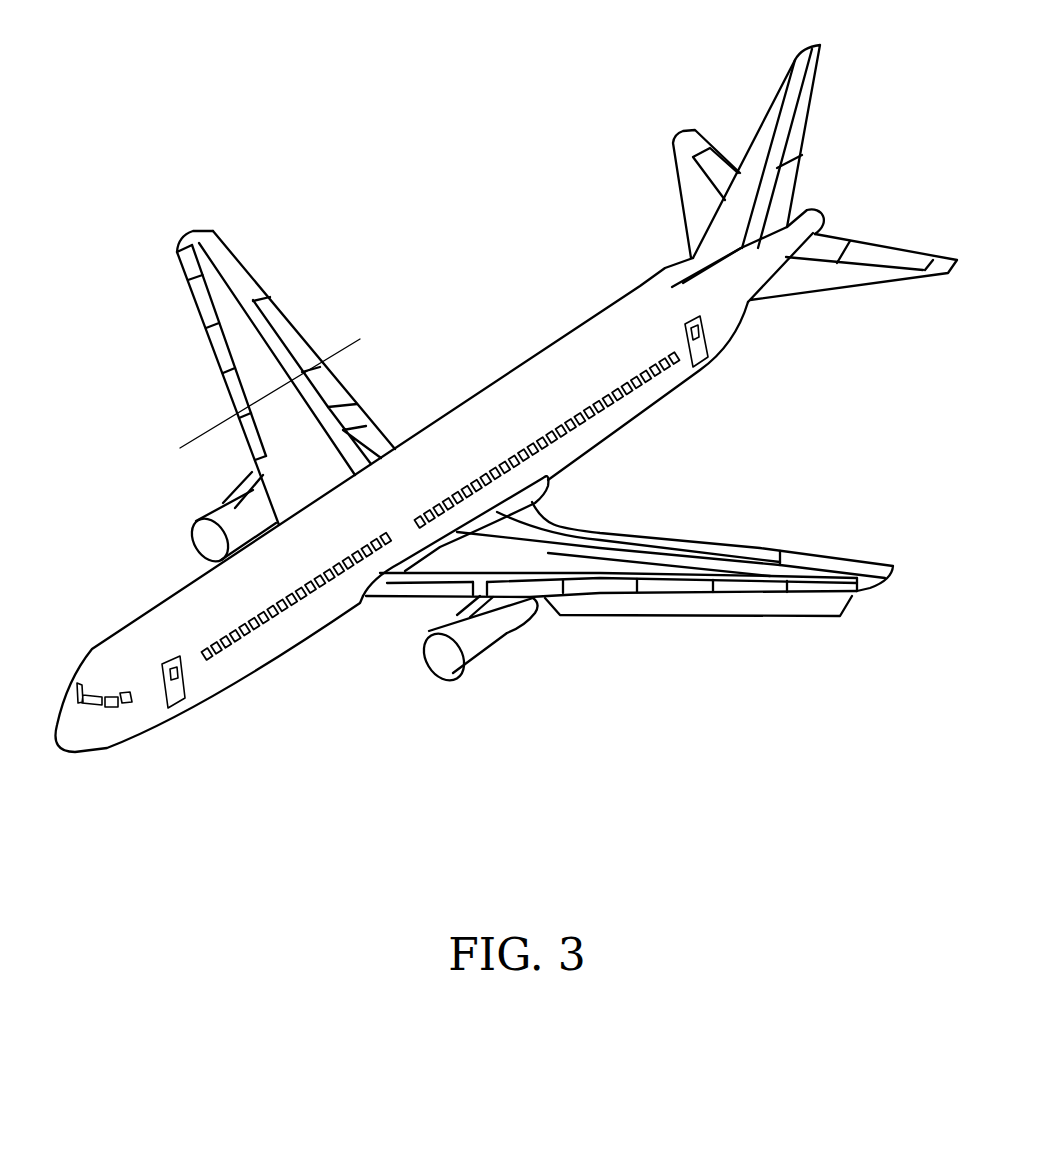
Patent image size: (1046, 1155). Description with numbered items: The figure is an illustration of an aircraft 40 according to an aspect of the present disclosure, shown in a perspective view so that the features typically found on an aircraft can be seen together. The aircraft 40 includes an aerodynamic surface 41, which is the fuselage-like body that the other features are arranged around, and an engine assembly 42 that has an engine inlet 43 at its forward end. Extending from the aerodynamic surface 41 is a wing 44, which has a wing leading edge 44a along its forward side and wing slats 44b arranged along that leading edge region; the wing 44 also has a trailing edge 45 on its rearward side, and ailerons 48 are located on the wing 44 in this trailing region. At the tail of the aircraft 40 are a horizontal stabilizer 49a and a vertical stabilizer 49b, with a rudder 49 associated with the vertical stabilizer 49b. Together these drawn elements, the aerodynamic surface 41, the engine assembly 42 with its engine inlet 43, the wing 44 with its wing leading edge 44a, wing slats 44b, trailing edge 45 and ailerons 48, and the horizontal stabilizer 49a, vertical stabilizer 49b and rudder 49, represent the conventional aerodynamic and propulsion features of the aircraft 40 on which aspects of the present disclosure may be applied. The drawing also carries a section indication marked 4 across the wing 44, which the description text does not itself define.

The aircraft 40 is at (556, 133).
The aerodynamic surface 41 is at (108, 660).
The engine assembly 42 is at (477, 647).
The engine inlet 43 is at (440, 653).
The wing 44 is at (250, 343).
The wing leading edge 44a is at (695, 613).
The wing slats 44b is at (213, 347).
The trailing edge 45 is at (584, 521).
The ailerons 48 is at (735, 550).
The rudder 49 is at (802, 123).
The horizontal stabilizer 49a is at (806, 283).
The vertical stabilizer 49b is at (761, 143).
The section line IV-IV 4 is at (269, 392).